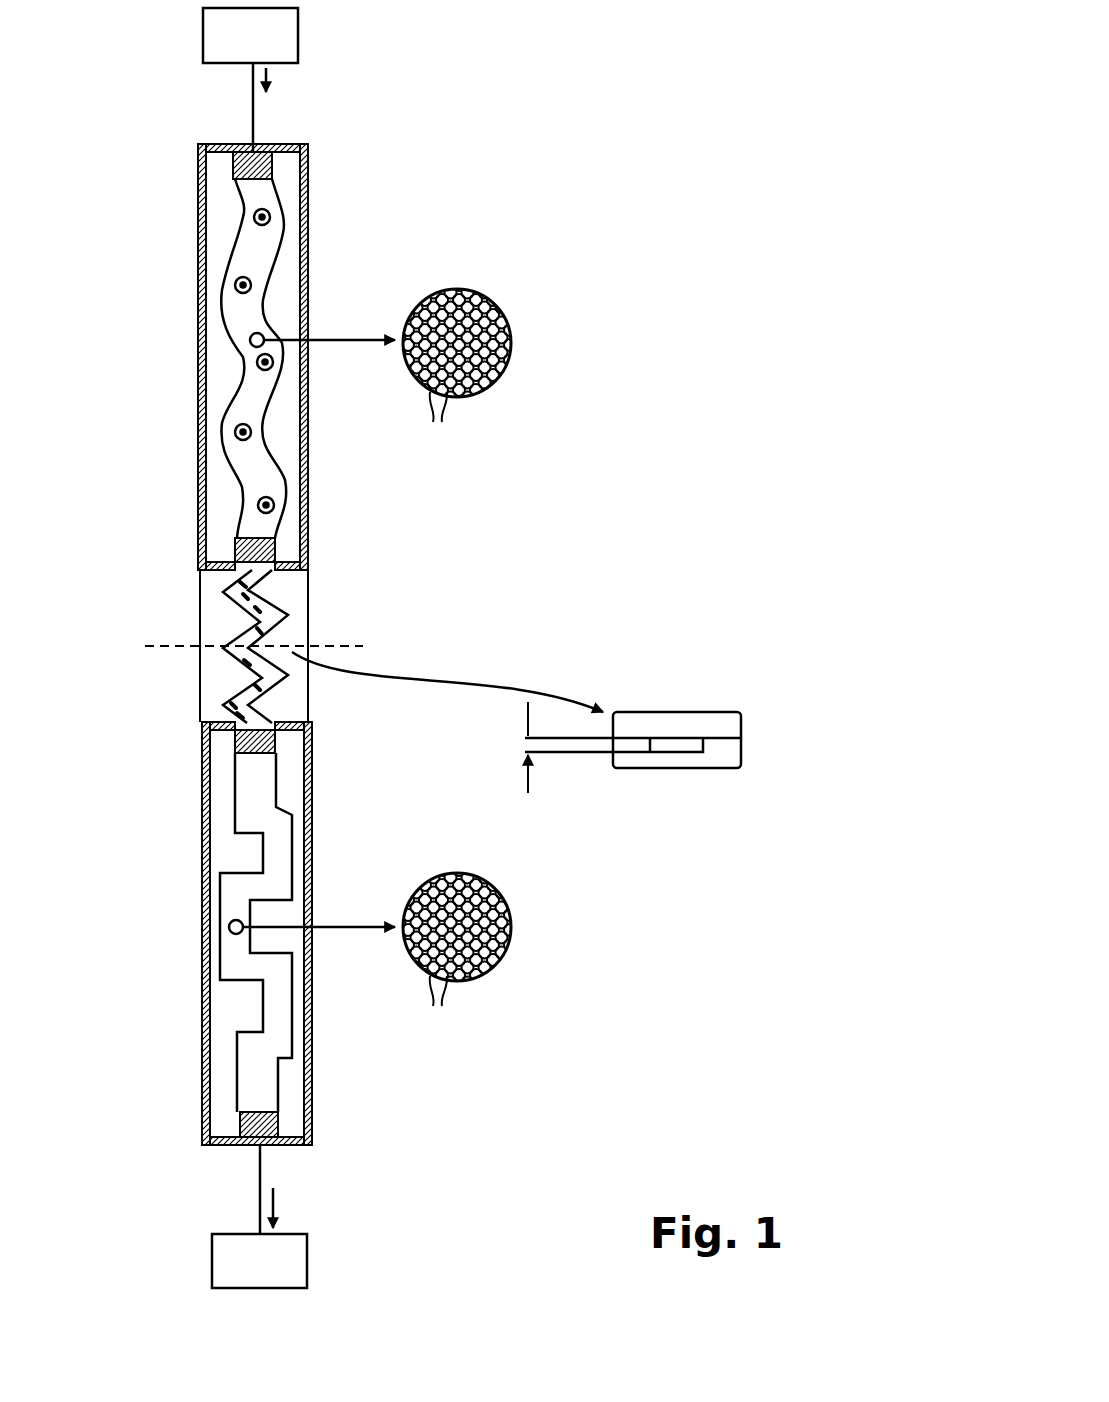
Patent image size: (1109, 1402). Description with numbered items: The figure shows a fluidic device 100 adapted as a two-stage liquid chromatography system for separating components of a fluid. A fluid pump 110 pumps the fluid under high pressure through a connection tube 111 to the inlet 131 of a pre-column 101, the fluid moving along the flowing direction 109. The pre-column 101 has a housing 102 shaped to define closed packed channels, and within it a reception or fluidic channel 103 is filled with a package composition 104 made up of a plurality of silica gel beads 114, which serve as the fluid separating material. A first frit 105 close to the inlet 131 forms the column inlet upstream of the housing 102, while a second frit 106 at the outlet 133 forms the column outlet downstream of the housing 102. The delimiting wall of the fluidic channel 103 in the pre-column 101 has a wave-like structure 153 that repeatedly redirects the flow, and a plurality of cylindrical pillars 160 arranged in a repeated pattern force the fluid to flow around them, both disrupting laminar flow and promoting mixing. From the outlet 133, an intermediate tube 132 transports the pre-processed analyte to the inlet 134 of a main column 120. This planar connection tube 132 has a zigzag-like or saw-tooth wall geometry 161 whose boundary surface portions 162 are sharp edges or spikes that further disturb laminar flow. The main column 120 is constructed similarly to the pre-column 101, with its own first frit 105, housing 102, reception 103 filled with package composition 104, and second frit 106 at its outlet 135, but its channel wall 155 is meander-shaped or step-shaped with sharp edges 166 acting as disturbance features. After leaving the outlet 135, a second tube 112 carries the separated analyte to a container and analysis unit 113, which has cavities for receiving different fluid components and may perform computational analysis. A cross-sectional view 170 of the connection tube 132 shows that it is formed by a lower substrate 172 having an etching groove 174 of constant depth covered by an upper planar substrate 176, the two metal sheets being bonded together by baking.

The fluidic device 100 is at (694, 127).
The pre-column 101 is at (318, 194).
The housing 102 is at (216, 383).
The fluidic channel 103 is at (252, 244).
The package composition 104 is at (250, 340).
The first frit 105 is at (233, 164).
The second frit 106 is at (235, 549).
The flowing direction 109 is at (268, 70).
The fluid pump 110 is at (203, 40).
The connection tube 111 is at (253, 100).
The second tube 112 is at (260, 1171).
The container and analysis unit 113 is at (212, 1260).
The silica gel beads 114 is at (457, 660).
The main column 120 is at (320, 774).
The inlet of the pre-column 131 is at (254, 144).
The intermediate tube 132 is at (290, 646).
The outlet of the pre-column 133 is at (275, 567).
The inlet of the main column 134 is at (275, 727).
The outlet of the main column 135 is at (247, 1145).
The wavy channel 153 is at (308, 397).
The meander channel housing wall 155 is at (310, 853).
The pillars 160 is at (251, 285).
The zigzag channel 161 is at (257, 637).
The boundary surface portions 162 is at (240, 581).
The sharp edges 166 is at (294, 800).
The cross-sectional view 170 is at (678, 662).
The lower substrate 172 is at (238, 712).
The etching groove 174 is at (242, 697).
The upper planar substrate 176 is at (717, 722).